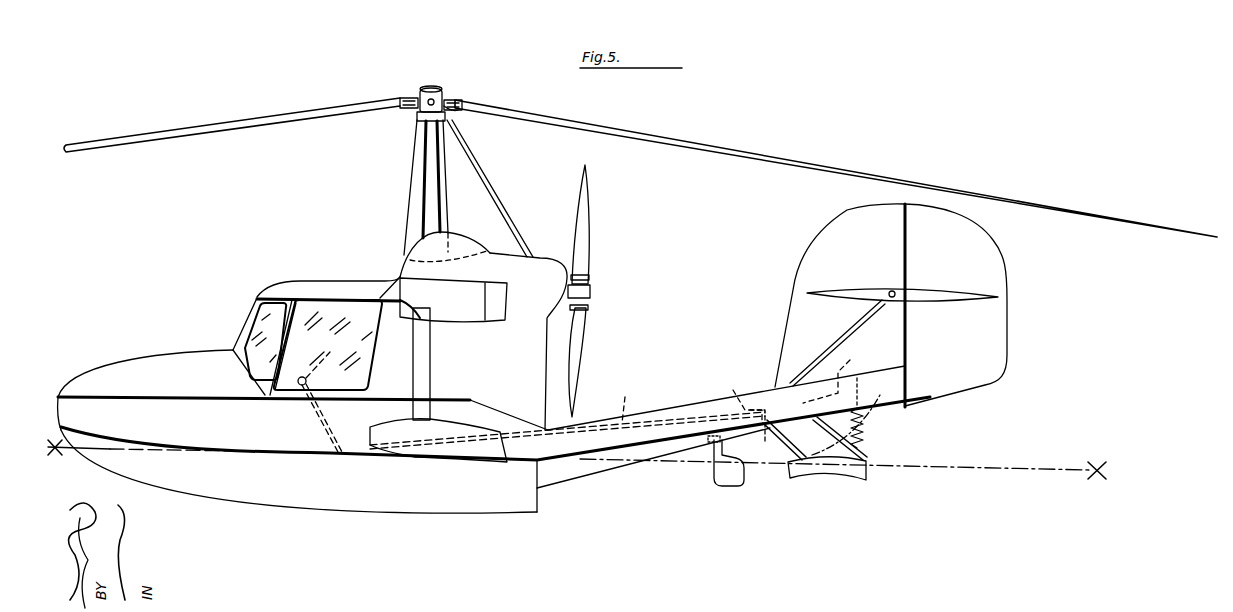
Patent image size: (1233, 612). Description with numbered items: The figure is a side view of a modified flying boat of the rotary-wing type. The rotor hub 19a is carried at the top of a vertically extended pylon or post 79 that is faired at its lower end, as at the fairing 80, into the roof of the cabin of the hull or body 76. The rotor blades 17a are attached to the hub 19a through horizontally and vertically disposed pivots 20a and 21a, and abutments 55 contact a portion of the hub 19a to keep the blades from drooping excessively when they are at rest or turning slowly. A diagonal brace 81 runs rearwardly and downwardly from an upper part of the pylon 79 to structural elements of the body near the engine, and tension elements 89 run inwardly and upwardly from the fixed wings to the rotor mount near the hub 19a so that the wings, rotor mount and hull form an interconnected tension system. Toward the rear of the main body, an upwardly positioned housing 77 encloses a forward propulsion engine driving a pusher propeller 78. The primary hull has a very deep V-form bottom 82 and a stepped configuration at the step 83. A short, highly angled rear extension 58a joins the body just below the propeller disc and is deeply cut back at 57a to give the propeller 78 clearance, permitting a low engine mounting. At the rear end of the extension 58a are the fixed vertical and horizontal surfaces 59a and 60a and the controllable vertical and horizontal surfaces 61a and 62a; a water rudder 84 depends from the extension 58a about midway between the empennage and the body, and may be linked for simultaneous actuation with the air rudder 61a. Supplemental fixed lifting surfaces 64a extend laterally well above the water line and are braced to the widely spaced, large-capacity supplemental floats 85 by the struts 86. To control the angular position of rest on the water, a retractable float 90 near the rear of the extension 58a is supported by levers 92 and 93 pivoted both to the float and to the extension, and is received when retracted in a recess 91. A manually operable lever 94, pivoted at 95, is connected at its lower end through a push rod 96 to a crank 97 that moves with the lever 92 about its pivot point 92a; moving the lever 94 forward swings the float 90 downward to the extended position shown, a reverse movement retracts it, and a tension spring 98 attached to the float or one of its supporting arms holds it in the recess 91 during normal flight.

The blades 17a is at (236, 122).
The hub 19a is at (431, 88).
The horizontal pivot 20a is at (452, 100).
The vertical pivot 21a is at (458, 112).
The abutments 55 is at (412, 108).
The pylon 79 is at (418, 152).
The tension elements 89 is at (428, 178).
The diagonal brace 81 is at (488, 195).
The fairing 80 is at (412, 262).
The propeller 78 is at (583, 240).
The housing 77 is at (528, 341).
The supplemental fixed lifting surfaces 64a is at (453, 300).
The struts 86 is at (430, 362).
The manually operable lever 94 is at (328, 345).
The pivot 95 is at (325, 420).
The hull 76 is at (303, 392).
The supplemental floats 85 is at (412, 448).
The deep V-form hull bottom 82 is at (330, 516).
The step 83 is at (538, 488).
The cut back 57a is at (548, 430).
The push rod 96 is at (634, 406).
The crank 97 is at (734, 399).
The rear extension 58a is at (726, 398).
The pivot point 92a is at (749, 433).
The water rudder 84 is at (722, 480).
The lever 92 is at (786, 462).
The lever 93 is at (814, 475).
The retractable float 90 is at (846, 478).
The tension spring 98 is at (867, 436).
The recess 91 is at (837, 351).
The vertical fixed surface 59a is at (840, 305).
The horizontal fixed surface 60a is at (818, 297).
The vertical controllable surface 61a is at (993, 260).
The horizontal controllable surface 62a is at (960, 300).